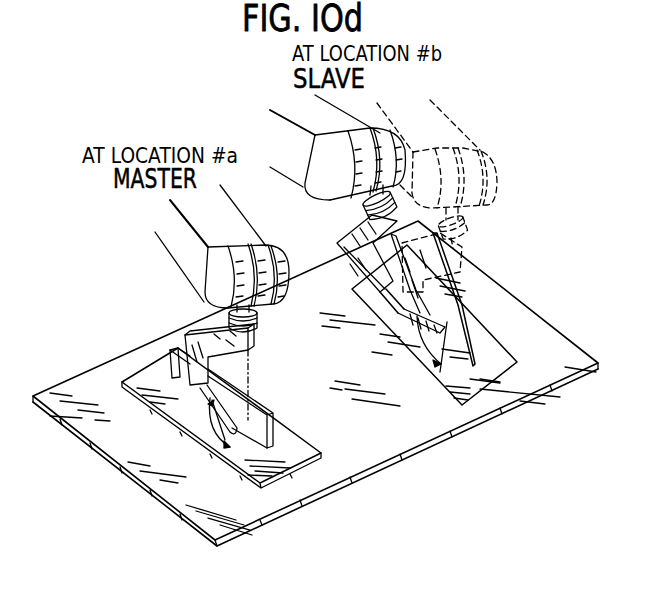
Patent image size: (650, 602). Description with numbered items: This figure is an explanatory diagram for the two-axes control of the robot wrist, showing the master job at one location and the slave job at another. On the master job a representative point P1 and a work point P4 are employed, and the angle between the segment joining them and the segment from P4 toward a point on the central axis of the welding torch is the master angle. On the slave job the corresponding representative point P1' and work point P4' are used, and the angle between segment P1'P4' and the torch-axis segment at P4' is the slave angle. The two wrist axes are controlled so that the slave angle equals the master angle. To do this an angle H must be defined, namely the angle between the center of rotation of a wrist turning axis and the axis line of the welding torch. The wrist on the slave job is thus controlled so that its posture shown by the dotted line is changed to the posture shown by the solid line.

The representative point on the master job P1 is at (221, 420).
The work point on the master job P4 is at (240, 398).
The angle H is at (245, 386).
The representative point on the slave job P1' is at (434, 325).
The work point on the slave job P4' is at (458, 299).